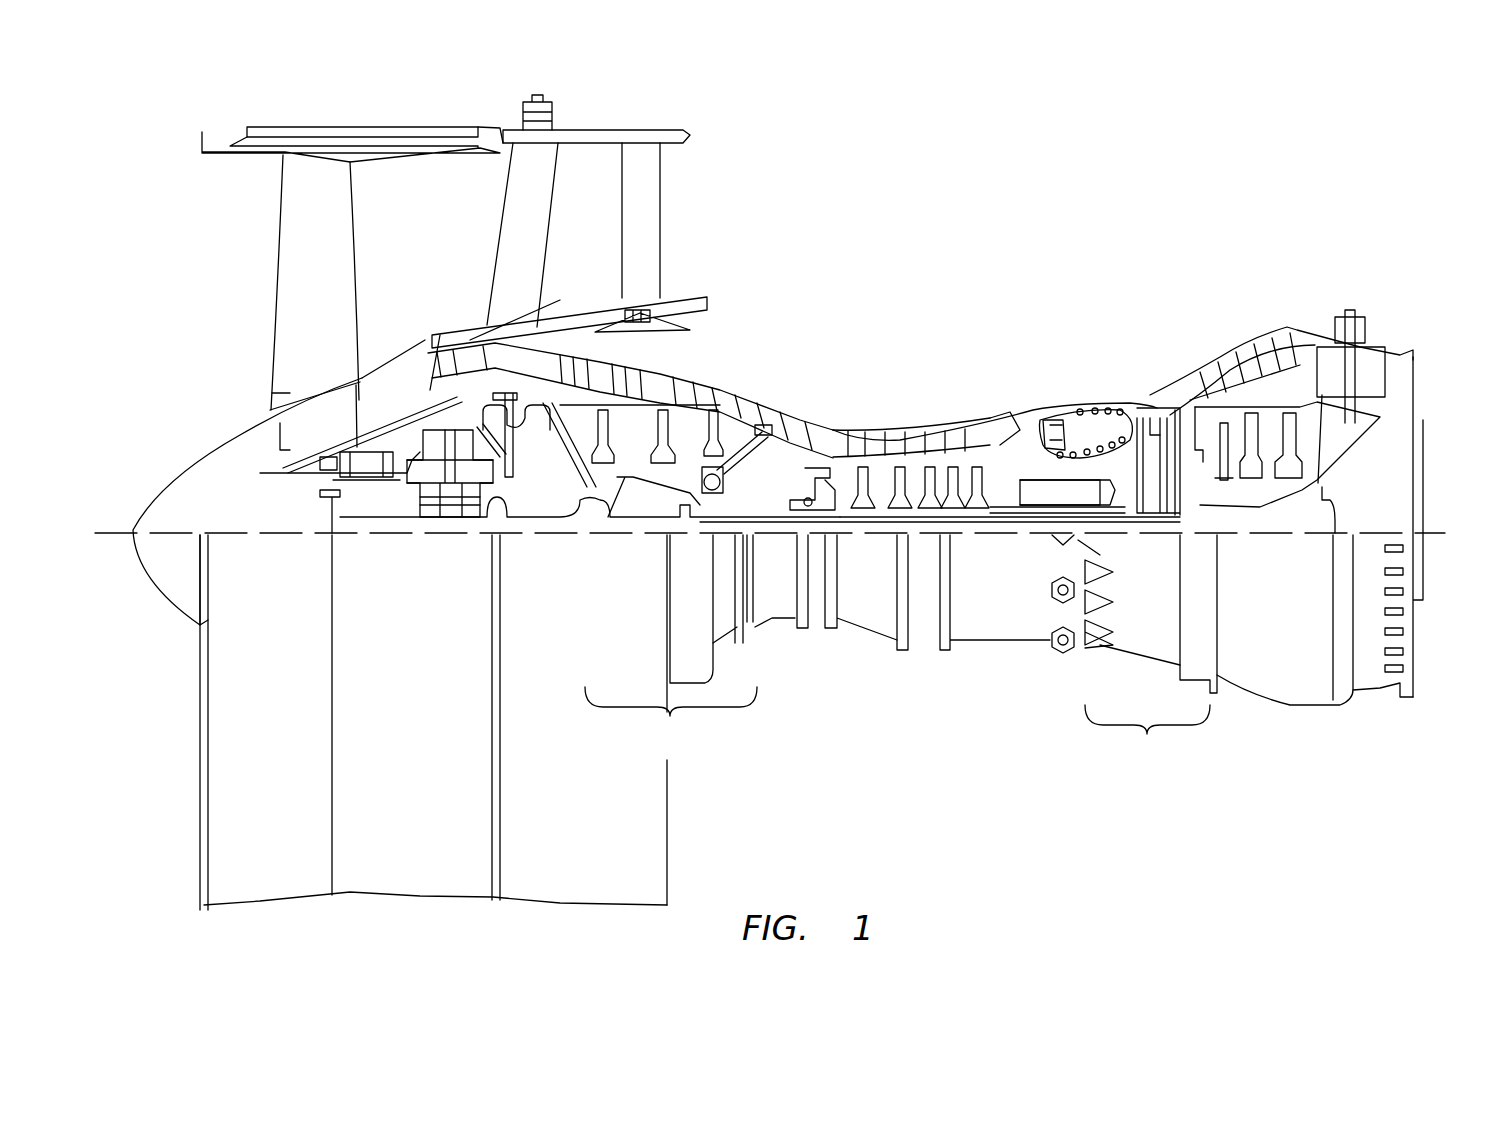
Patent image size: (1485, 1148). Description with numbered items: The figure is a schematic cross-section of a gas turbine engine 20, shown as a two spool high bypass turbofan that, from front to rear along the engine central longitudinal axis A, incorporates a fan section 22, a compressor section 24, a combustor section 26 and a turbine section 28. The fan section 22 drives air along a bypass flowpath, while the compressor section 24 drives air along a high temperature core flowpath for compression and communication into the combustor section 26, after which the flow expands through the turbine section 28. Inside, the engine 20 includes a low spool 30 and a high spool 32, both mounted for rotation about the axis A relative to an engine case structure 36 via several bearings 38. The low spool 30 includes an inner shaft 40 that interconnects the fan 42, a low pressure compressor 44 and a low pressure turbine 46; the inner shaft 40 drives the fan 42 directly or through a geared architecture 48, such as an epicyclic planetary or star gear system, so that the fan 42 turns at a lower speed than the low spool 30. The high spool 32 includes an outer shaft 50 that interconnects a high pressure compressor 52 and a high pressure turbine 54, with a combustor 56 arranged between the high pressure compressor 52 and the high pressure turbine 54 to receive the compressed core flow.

The gas turbine engine 20 is at (1145, 178).
The fan section 22 is at (202, 118).
The compressor section 24 is at (500, 270).
The combustor section 26 is at (1090, 270).
The turbine section 28 is at (1355, 270).
The low spool 30 is at (777, 483).
The high spool 32 is at (990, 487).
The engine case structure 36 is at (920, 648).
The bearings 38 is at (528, 607).
The inner shaft 40 is at (1113, 520).
The fan 42 is at (302, 340).
The low pressure compressor 44 is at (690, 373).
The low pressure turbine 46 is at (1265, 358).
The geared architecture 48 is at (450, 483).
The outer shaft 50 is at (1117, 490).
The high pressure compressor 52 is at (913, 487).
The high pressure turbine 54 is at (1157, 418).
The combustor 56 is at (1090, 430).
The engine central longitudinal axis A is at (1440, 533).